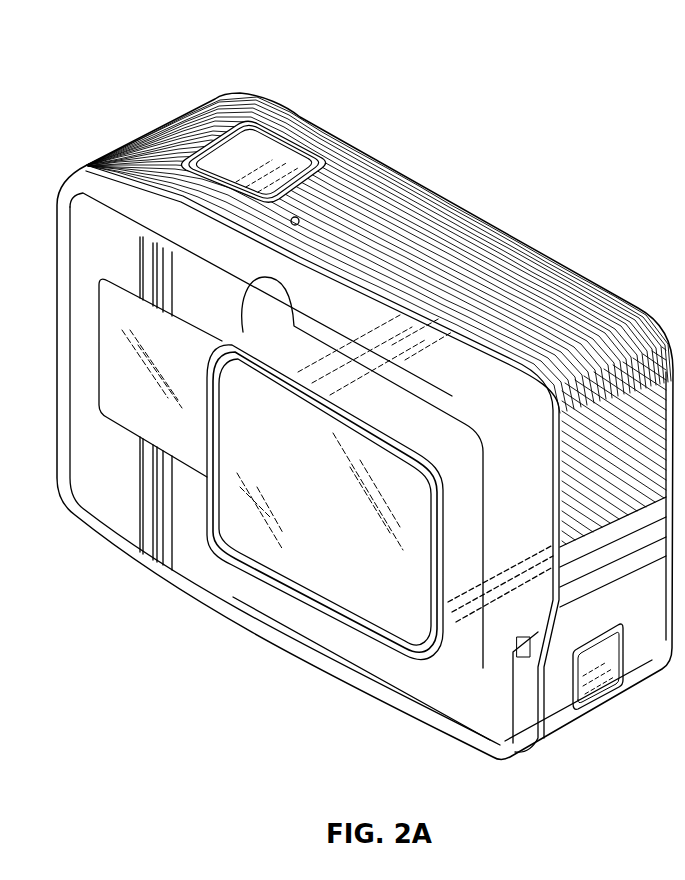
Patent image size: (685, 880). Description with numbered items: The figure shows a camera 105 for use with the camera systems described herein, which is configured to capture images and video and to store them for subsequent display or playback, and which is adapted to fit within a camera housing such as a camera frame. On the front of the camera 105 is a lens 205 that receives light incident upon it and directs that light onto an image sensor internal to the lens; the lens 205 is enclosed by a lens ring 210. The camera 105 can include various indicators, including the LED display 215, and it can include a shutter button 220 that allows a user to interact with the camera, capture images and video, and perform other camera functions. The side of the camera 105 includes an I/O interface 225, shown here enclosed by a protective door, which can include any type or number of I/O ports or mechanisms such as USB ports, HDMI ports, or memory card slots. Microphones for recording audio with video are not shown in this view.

The camera 105 is at (115, 91).
The lens 205 is at (342, 522).
The lens ring 210 is at (462, 590).
The LED display 215 is at (137, 345).
The shutter button 220 is at (276, 133).
The I/O interface 225 is at (608, 684).